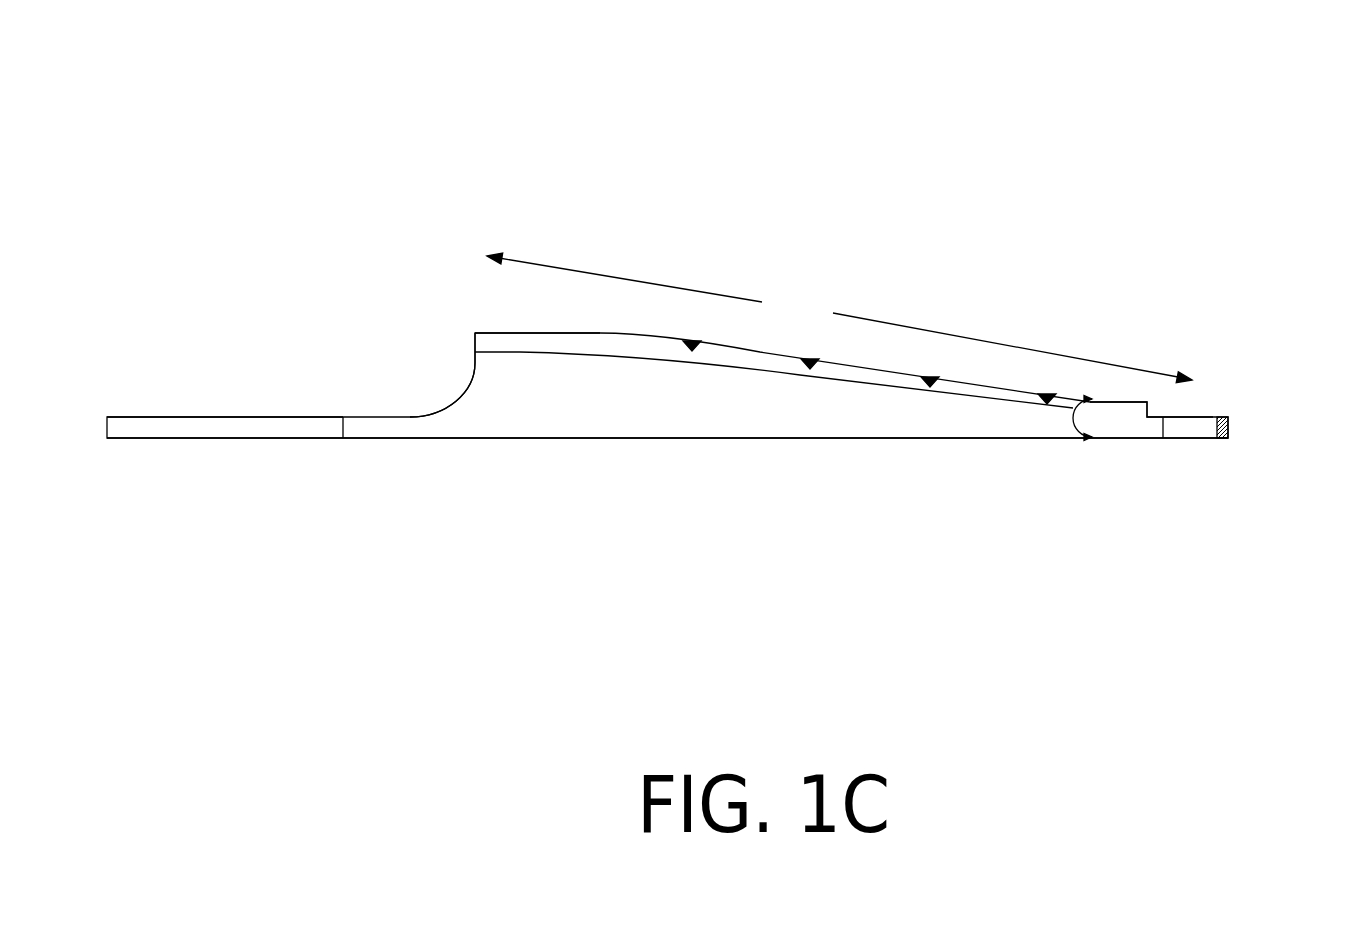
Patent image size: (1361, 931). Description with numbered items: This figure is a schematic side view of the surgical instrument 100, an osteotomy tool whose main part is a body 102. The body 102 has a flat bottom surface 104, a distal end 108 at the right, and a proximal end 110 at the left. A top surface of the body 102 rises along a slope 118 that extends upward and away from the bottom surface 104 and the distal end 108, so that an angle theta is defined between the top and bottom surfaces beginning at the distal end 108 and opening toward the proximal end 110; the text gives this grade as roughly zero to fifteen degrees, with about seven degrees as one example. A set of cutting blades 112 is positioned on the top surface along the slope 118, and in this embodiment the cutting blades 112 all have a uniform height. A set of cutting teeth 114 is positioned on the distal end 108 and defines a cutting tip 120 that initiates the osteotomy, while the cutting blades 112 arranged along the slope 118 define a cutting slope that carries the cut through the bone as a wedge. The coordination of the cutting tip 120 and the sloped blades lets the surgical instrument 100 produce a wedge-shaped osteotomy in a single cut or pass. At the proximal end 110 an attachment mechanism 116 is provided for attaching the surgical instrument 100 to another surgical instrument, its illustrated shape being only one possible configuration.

The surgical instrument 100 is at (200, 125).
The body 102 is at (818, 440).
The bottom surface 104 is at (490, 450).
The distal end 108 is at (1127, 472).
The proximal end 110 is at (332, 265).
The set of cutting blades 112 is at (475, 330).
The set of cutting teeth 114 is at (1212, 415).
The attachment mechanism 116 is at (205, 416).
The slope 118 is at (839, 318).
The cutting tip 120 is at (1210, 476).